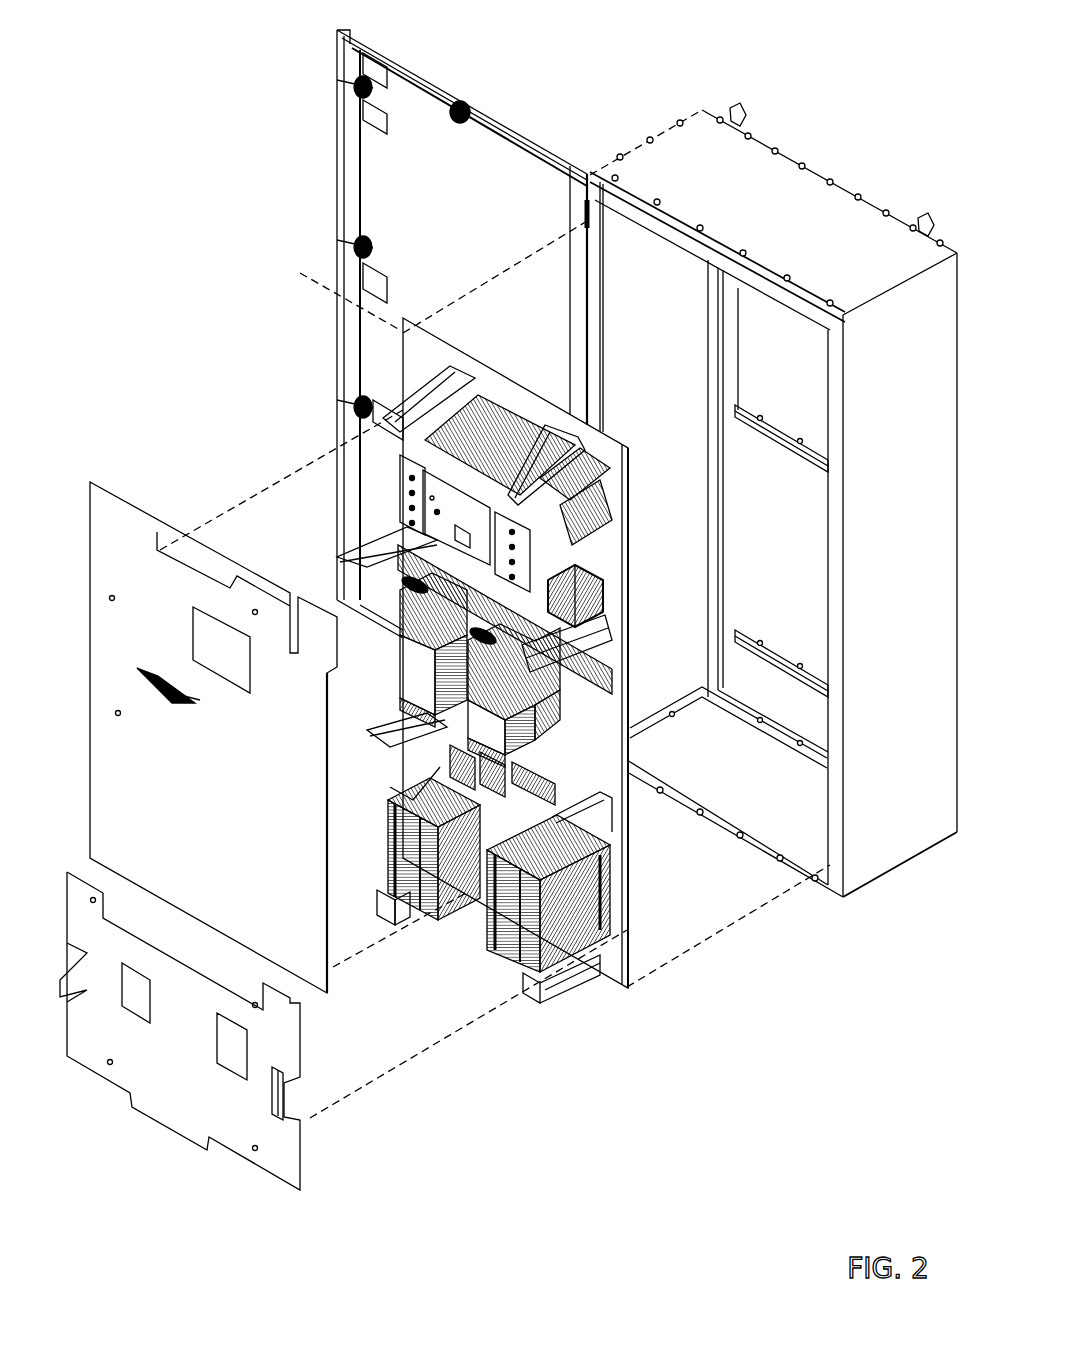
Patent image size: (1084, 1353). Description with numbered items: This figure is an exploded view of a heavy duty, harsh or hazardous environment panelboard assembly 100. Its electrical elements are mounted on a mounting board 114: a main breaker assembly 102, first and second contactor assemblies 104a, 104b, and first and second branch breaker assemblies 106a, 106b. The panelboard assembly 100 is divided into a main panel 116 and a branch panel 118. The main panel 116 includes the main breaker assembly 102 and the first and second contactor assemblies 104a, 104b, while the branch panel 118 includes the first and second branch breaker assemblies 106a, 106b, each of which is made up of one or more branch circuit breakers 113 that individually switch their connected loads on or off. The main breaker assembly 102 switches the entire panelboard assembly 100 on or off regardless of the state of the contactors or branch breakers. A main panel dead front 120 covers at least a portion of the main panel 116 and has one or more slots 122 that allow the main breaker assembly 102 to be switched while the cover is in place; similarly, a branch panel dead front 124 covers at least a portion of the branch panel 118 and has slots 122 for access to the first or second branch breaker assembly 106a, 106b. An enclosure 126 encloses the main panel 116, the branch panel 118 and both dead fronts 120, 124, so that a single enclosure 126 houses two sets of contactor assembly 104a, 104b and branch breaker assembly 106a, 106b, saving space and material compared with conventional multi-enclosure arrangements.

The panelboard assembly 100 is at (45, 48).
The main breaker assembly 102 is at (497, 432).
The first contactor assembly 104a is at (420, 690).
The second contactor assembly 104b is at (547, 697).
The first branch breaker assembly 106a is at (393, 858).
The second branch breaker assembly 106b is at (613, 923).
The branch circuit breaker 113 is at (405, 907).
The mounting board 114 is at (618, 620).
The main panel 116 is at (641, 517).
The branch panel 118 is at (640, 942).
The main panel dead front 120 is at (113, 528).
The slot 122 is at (240, 690).
The branch panel dead front 124 is at (287, 1180).
The enclosure 126 is at (850, 220).